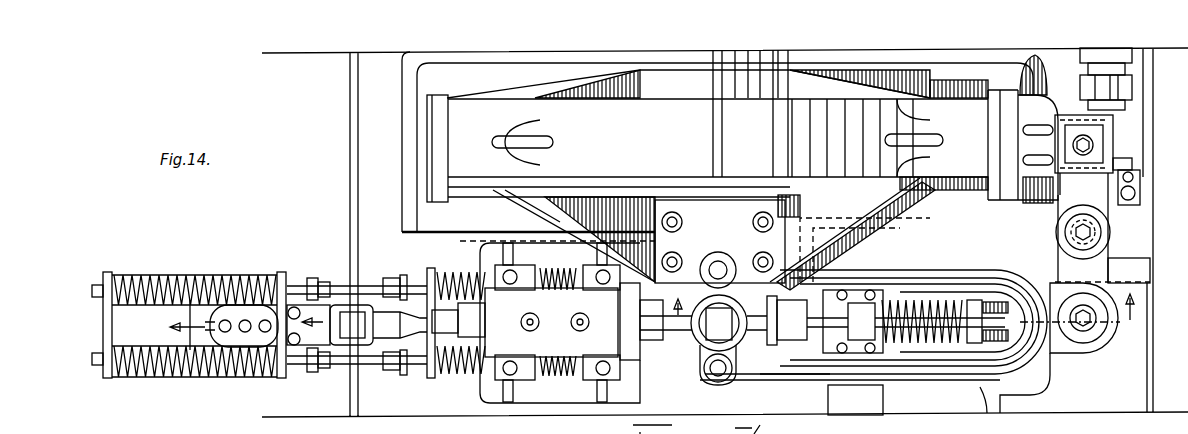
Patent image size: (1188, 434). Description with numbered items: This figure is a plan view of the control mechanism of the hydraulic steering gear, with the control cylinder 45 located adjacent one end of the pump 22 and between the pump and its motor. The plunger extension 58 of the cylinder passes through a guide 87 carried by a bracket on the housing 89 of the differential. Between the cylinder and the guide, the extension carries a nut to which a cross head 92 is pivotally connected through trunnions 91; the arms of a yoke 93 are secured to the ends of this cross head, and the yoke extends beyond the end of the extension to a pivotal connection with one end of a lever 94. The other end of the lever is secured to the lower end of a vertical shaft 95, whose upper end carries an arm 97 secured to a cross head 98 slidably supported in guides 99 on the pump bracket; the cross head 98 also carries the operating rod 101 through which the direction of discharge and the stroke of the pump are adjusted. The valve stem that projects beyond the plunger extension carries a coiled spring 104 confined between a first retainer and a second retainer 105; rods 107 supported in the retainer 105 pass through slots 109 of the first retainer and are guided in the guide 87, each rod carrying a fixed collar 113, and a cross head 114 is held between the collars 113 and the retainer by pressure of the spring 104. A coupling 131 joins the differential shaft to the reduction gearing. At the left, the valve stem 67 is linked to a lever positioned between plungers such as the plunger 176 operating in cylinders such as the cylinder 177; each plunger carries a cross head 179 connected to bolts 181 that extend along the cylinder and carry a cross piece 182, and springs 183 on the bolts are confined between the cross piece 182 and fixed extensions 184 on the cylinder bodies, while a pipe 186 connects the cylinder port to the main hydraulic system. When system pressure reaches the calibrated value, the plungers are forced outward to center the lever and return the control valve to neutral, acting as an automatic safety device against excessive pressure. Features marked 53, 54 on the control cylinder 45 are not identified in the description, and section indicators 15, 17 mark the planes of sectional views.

The pump 22 is at (463, 141).
The housing 89 is at (895, 232).
The operating rod 101 is at (1038, 129).
The cross head 98 is at (1088, 146).
The guides 99 is at (1132, 166).
The arm 97 is at (1142, 195).
The vertical shaft 95 is at (1060, 216).
The lever 94 is at (1129, 270).
The section line 17 is at (906, 316).
The rod 107 is at (1053, 352).
The yoke 93 is at (930, 380).
The slots 109 is at (855, 400).
The coupling 131 is at (830, 393).
The guide 87 is at (782, 332).
The plunger extension 58 is at (792, 320).
The cross head 92 is at (700, 356).
The trunnions 91 is at (720, 305).
The collar 113 is at (850, 300).
The cross head 114 is at (873, 300).
The coiled spring 104 is at (905, 300).
The second spring retainer 105 is at (978, 300).
The control cylinder 45 is at (560, 323).
The port 53 is at (521, 324).
The port 54 is at (584, 317).
The plunger 176 is at (431, 380).
The valve stem 67 is at (393, 372).
The cross head 179 is at (306, 368).
The section line 15 is at (235, 325).
The bolts 181 is at (298, 285).
The fixed extensions 184 is at (280, 272).
The cross piece 182 is at (103, 318).
The spring 183 is at (160, 275).
The cylinder 177 is at (229, 305).
The pipe 186 is at (222, 348).